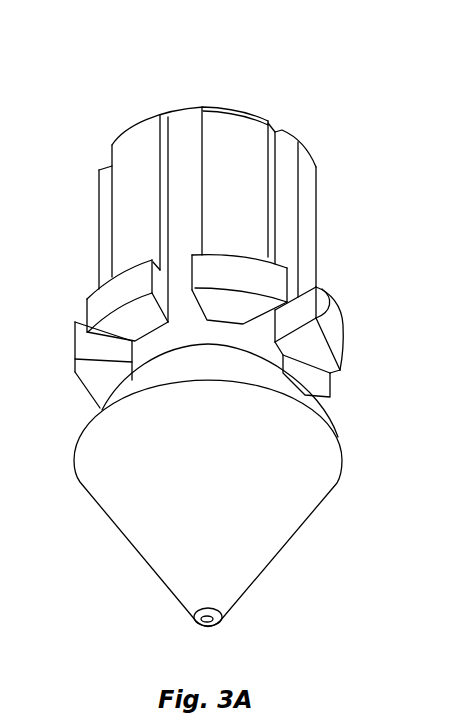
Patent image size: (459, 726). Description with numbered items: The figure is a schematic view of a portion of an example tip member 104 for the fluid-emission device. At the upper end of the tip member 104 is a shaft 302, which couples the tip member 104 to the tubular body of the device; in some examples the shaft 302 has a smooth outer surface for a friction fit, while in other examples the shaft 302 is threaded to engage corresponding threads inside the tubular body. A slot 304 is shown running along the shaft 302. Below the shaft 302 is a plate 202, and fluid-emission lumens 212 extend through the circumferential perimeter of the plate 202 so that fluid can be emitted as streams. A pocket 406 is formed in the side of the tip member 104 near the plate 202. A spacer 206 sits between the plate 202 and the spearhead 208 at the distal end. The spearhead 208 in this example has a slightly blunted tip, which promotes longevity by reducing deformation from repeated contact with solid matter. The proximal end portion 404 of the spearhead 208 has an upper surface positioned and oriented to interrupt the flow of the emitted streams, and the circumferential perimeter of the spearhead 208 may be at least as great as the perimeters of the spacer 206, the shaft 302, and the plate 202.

The tip member 104 is at (197, 63).
The plate 202 is at (135, 318).
The spacer 206 is at (307, 393).
The spearhead 208 is at (277, 530).
The fluid-emission lumen 212 is at (288, 317).
The shaft 302 is at (247, 205).
The slot 304 is at (275, 158).
The proximal end portion 404 is at (220, 368).
The curved pocket 406 is at (338, 308).